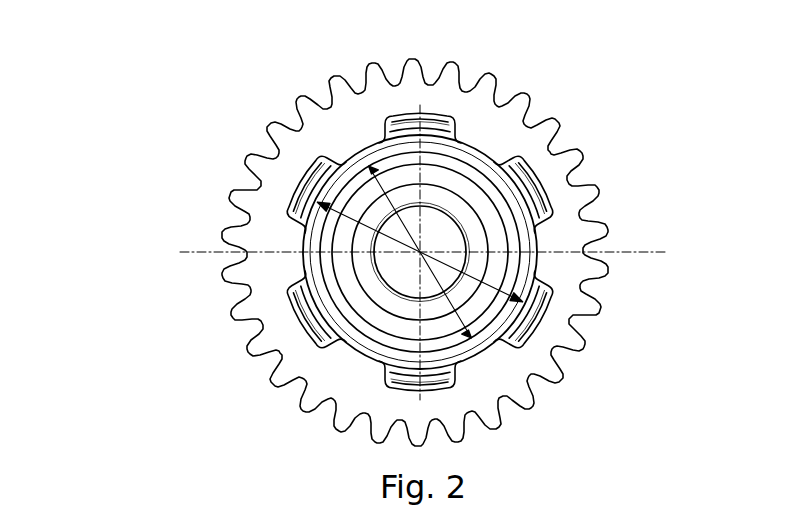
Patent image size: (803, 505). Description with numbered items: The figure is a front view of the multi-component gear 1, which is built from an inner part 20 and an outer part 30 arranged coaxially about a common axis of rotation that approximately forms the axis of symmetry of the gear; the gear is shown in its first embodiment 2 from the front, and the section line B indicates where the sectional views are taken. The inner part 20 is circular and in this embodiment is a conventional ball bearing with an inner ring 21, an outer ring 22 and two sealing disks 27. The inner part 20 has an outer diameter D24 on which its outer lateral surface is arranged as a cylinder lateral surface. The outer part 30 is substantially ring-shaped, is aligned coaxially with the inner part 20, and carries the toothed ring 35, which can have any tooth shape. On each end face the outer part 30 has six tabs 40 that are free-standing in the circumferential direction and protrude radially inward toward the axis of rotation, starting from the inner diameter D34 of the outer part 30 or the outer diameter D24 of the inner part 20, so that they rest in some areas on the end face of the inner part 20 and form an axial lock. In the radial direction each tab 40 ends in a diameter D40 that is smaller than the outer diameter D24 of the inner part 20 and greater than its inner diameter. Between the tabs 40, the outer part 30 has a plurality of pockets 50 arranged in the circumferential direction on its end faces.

The multi-component gear 1 is at (371, 224).
The gear wheel 2 is at (371, 224).
The inner part 20 is at (306, 305).
The inner ring 21 is at (398, 305).
The outer ring 22 is at (596, 358).
The sealing disk 27 is at (548, 295).
The outer part 30 is at (362, 237).
The toothed ring 35 is at (520, 102).
The tab 40 is at (411, 229).
The pocket 50 is at (538, 178).
The outer diameter of the inner part D24 is at (283, 252).
The inner diameter of the outer part D34 is at (420, 252).
The diameter of the tab ends D40 is at (420, 252).
The section line B- B is at (192, 238).